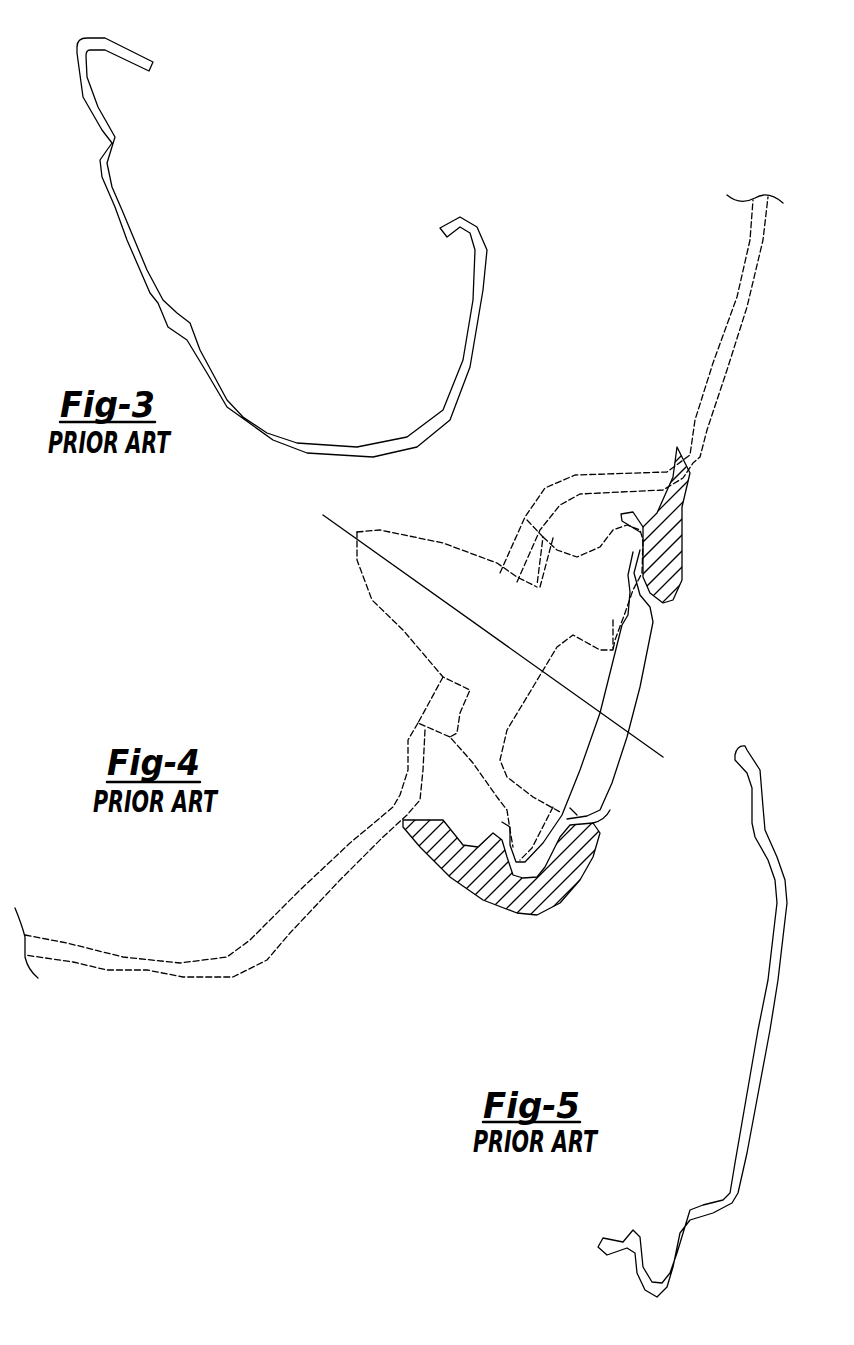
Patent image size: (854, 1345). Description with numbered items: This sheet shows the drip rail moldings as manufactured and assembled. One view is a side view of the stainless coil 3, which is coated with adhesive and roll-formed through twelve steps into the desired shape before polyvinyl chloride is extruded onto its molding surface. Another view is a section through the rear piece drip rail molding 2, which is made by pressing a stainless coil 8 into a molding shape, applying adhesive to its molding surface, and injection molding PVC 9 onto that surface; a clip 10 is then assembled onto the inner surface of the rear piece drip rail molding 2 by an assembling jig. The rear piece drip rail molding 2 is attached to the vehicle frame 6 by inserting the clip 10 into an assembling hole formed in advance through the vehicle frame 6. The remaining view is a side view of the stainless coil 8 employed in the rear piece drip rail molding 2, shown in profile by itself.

In FIG. 4, the rear piece drip rail molding 2 is at (610, 788).
In FIG. 3, the stainless coil 3 is at (120, 220).
In FIG. 4, the vehicle frame 6 is at (325, 878).
In FIG. 4, the stainless coil 8 is at (647, 663).
In FIG. 5, the stainless coil 8 is at (737, 1155).
In FIG. 4, the PVC 9 is at (670, 553).
In FIG. 4, the clip 10 is at (397, 598).